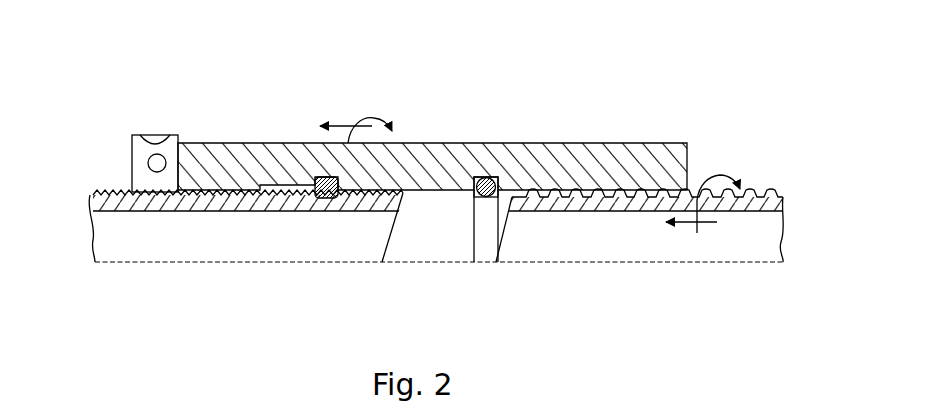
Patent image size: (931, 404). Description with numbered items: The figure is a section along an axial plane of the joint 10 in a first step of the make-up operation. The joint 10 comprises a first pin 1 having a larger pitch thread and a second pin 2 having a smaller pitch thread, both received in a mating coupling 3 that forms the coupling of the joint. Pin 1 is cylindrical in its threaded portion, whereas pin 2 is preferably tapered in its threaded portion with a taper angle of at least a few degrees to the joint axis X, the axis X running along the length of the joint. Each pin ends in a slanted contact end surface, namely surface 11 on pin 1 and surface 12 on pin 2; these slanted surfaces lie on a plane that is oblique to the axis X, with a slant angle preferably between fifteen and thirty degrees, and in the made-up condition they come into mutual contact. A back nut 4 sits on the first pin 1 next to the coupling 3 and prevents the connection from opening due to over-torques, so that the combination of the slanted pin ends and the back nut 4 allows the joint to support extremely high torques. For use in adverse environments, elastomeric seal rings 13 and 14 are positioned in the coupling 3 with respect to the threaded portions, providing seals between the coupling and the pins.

The first pin 1 is at (157, 238).
The second pin 2 is at (748, 217).
The coupling 3 is at (437, 141).
The back nut 4 is at (157, 122).
The joint 10 is at (409, 101).
The contact end surface 11 is at (390, 240).
The contact end surface 12 is at (503, 227).
The elastomeric seal ring 13 is at (322, 178).
The elastomeric seal ring 14 is at (487, 178).
The joint axis X is at (707, 262).